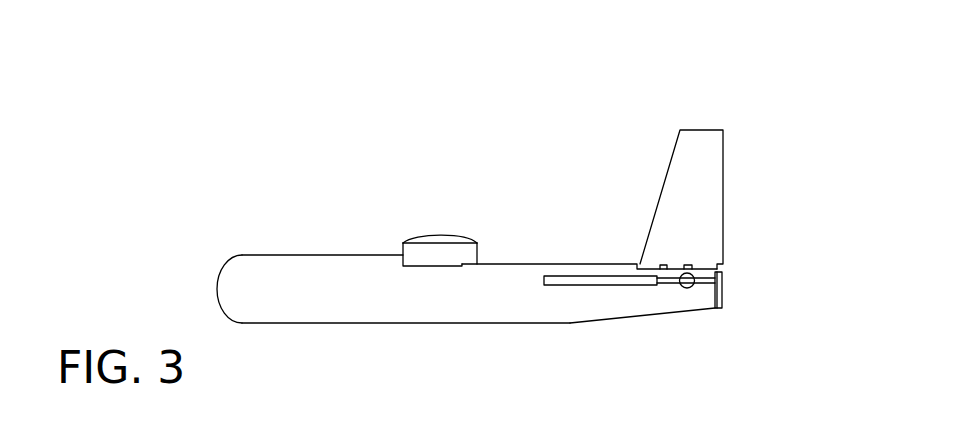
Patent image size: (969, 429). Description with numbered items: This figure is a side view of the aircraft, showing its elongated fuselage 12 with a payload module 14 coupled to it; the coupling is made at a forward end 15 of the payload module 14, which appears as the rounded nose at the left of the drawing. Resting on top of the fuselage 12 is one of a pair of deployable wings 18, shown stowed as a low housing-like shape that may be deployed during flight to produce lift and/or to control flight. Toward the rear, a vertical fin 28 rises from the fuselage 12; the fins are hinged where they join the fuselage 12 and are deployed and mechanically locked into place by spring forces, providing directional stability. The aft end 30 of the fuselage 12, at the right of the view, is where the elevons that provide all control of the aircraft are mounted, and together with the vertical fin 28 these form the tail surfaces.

The fuselage 12 is at (440, 325).
The payload module 14 is at (217, 284).
The forward end 15 is at (316, 333).
The wing 18 is at (439, 237).
The vertical fin 28 is at (703, 130).
The aft end 30 is at (736, 318).